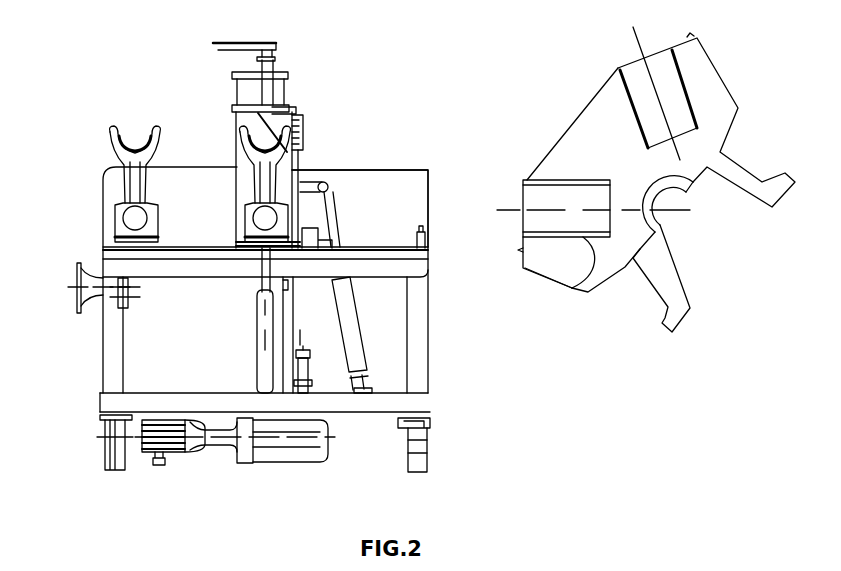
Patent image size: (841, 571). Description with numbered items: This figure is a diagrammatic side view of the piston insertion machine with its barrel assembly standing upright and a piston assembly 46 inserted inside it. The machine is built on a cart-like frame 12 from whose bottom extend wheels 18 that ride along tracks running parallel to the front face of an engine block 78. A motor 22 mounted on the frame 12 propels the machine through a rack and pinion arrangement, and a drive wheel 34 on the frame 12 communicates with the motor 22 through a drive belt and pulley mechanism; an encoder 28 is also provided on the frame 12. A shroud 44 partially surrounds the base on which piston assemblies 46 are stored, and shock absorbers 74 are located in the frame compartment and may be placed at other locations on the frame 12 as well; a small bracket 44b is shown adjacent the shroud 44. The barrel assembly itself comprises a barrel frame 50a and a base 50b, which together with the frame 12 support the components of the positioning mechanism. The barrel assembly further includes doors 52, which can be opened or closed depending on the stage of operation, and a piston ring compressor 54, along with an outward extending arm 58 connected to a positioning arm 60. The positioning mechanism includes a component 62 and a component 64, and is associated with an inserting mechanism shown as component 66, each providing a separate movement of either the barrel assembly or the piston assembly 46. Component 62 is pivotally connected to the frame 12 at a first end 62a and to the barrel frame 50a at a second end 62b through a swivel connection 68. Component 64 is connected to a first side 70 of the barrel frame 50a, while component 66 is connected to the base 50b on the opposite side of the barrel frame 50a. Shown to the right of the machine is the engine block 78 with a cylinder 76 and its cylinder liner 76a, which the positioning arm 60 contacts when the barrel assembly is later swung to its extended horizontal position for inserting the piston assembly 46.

The frame 12 is at (428, 298).
The wheels 18 is at (432, 455).
The motor 22 is at (253, 462).
The encoder 28 is at (182, 448).
The drive wheel 34 is at (80, 300).
The shroud 44 is at (405, 202).
The bracket on panel 44b is at (338, 244).
The piston assembly 46 is at (103, 189).
The barrel frame 50a is at (286, 321).
The base of barrel assembly 50b is at (247, 246).
The doors 52 is at (298, 151).
The piston ring compressor 54 is at (288, 80).
The outward extending arm 58 is at (268, 90).
The positioning arm 60 is at (247, 43).
The component of positioning mechanism 62 is at (411, 284).
The first end 62a is at (368, 383).
The second end 62b is at (333, 203).
The component of positioning mechanism 64 is at (300, 370).
The inserting mechanism component 66 is at (257, 345).
The swivel connection 68 is at (327, 183).
The first side of barrel frame 70 is at (297, 333).
The shock absorbers 74 is at (424, 236).
The cylinder 76 is at (523, 200).
The cylinder liner 76a is at (570, 288).
The engine block 78 is at (693, 37).